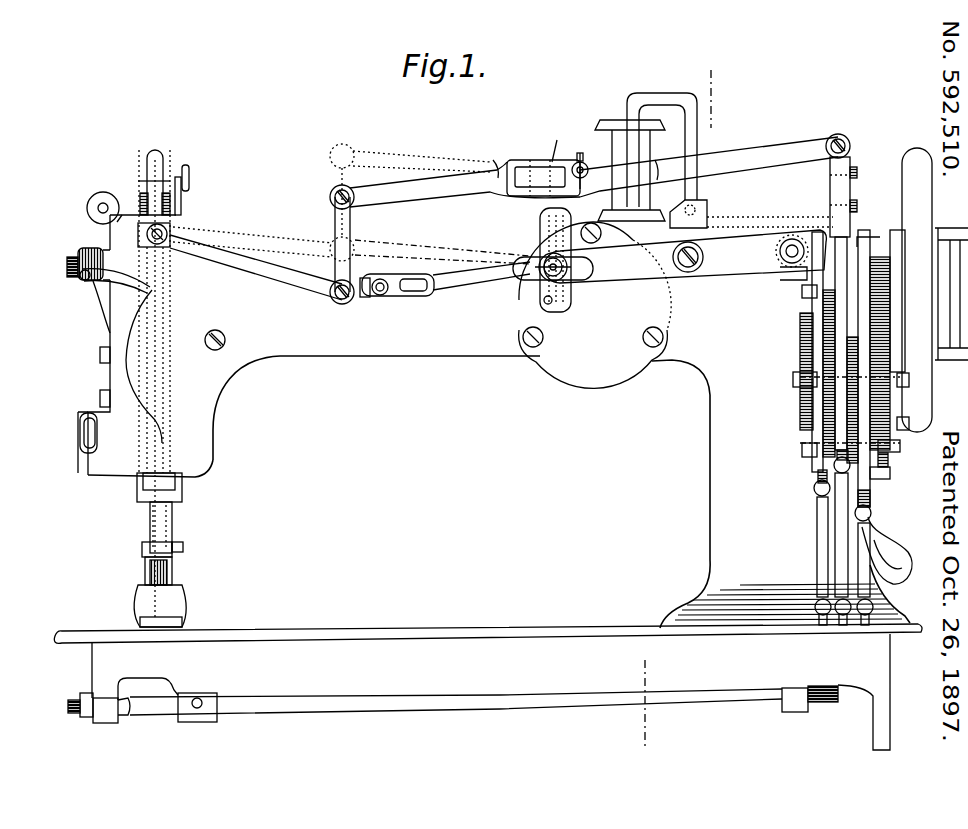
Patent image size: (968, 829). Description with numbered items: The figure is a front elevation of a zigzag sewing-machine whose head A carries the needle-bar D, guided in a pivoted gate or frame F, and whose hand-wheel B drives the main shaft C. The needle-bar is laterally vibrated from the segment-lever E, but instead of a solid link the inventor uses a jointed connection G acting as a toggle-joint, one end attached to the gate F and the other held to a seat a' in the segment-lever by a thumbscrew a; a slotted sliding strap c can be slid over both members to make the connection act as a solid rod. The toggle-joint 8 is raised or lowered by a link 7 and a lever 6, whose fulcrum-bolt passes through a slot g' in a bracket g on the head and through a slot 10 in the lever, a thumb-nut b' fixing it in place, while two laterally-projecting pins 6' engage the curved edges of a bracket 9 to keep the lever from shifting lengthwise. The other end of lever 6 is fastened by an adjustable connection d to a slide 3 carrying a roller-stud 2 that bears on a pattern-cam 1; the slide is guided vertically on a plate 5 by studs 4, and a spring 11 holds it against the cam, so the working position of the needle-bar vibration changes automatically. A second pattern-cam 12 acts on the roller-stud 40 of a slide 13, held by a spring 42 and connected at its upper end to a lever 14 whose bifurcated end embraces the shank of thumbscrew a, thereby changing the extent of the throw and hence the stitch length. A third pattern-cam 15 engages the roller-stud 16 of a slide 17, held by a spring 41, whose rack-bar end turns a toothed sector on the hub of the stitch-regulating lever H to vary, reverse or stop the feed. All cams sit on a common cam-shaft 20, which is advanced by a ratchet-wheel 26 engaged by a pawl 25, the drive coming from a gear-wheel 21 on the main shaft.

The head of the sewing-machine A is at (278, 352).
The hand-wheel B is at (935, 290).
The needle-bar D is at (158, 155).
The segment-lever E is at (563, 311).
The needle-bar gate or frame F is at (167, 224).
The stitch-regulating lever H is at (880, 507).
The main shaft C is at (463, 278).
The thumbscrew a is at (564, 264).
The seat a' is at (528, 266).
The slotted sliding strap c is at (412, 297).
The connection d is at (856, 186).
The bracket g is at (662, 150).
The slot g' is at (557, 137).
The thumb-nut b' is at (581, 152).
The pattern-cam 1 is at (806, 348).
The roller-stud 2 is at (681, 405).
The slide 3 is at (830, 263).
The studs 4 is at (808, 454).
The plate 5 is at (903, 455).
The lever 6 is at (594, 168).
The laterally-projecting pins 6' is at (576, 151).
The link 7 is at (345, 228).
The toggle-joint 8 is at (346, 305).
The bracket 9 is at (751, 214).
The slot 10 is at (555, 170).
The spring 11 is at (820, 539).
The pattern-cam 12 is at (806, 420).
The slide 13 is at (805, 291).
The lever 14 is at (685, 253).
The pattern-cam 15 is at (803, 443).
The roller-stud 16 is at (806, 367).
The slide 17 is at (890, 470).
The cam-shaft 20 is at (798, 390).
The gear-wheel 21 is at (887, 253).
The pawl 25 is at (887, 307).
The ratchet-wheel 26 is at (890, 410).
The roller-stud 40 is at (817, 325).
The spring 41 is at (912, 591).
The spring 42 is at (820, 567).